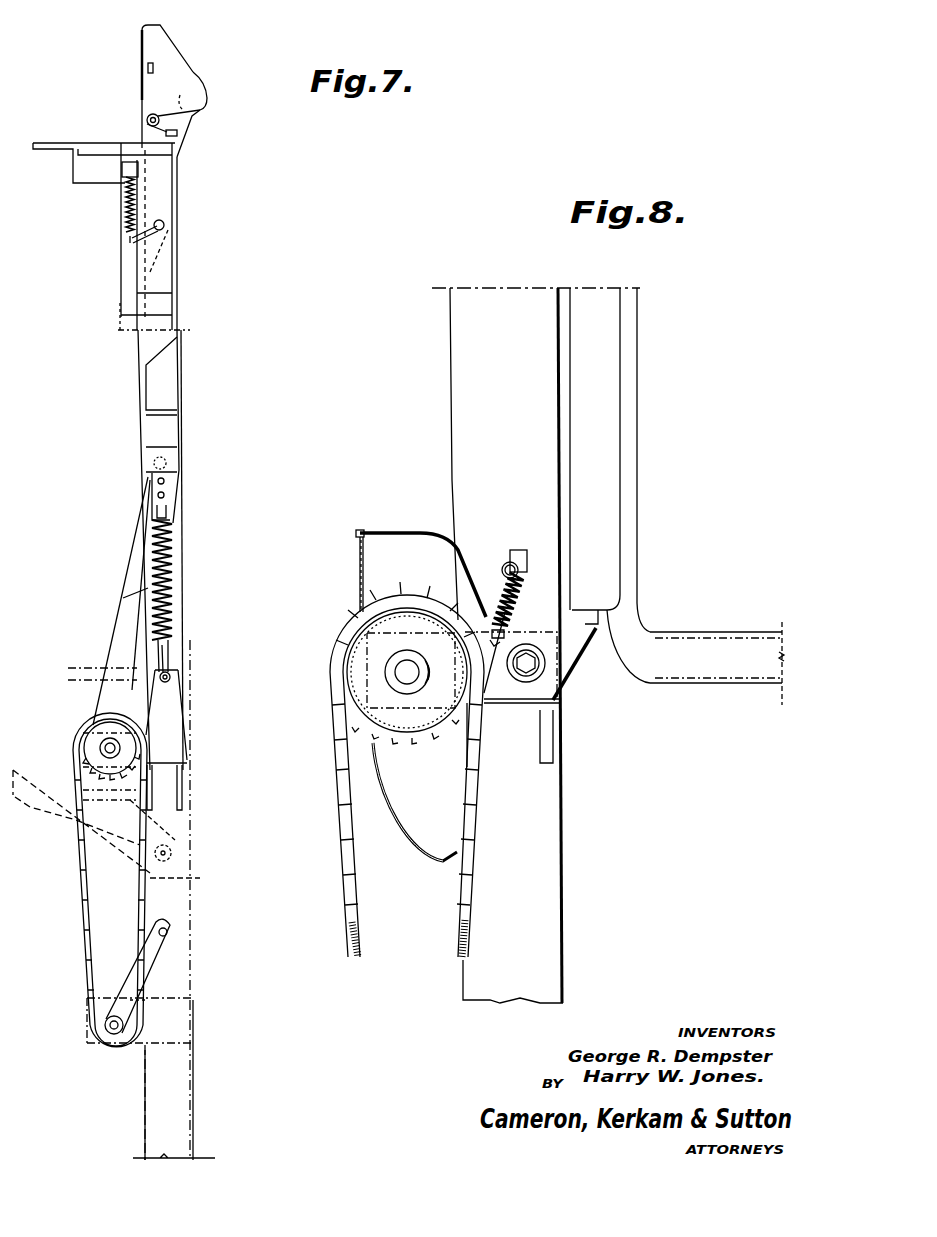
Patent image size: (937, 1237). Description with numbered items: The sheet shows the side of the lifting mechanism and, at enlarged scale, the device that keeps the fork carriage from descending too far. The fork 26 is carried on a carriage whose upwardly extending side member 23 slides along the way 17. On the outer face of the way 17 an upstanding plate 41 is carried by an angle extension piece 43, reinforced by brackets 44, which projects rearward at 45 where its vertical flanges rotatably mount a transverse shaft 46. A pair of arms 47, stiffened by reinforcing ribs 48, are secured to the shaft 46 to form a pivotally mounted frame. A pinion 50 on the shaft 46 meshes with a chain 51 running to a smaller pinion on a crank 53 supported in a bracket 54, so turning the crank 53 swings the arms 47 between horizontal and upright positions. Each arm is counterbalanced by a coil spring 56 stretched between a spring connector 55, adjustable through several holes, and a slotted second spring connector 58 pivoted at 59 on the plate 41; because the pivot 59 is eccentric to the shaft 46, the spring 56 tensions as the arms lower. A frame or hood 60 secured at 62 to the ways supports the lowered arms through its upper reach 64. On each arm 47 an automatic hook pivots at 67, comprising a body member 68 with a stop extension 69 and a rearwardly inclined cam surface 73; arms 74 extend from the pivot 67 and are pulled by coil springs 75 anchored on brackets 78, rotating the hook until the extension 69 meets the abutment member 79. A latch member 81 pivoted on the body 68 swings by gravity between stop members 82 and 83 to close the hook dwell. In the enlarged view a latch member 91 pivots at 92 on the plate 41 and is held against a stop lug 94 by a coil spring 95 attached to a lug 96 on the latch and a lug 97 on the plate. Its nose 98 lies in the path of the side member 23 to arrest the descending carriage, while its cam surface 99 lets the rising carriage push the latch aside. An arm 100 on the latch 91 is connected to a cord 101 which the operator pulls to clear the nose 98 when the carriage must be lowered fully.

In FIG. 8, the way 17 is at (545, 786).
In FIG. 8, the side member 23 is at (610, 484).
In FIG. 8, the fork 26 is at (692, 652).
In FIG. 7, the upstanding plate 41 is at (168, 712).
In FIG. 8, the upstanding plate 41 is at (540, 610).
In FIG. 7, the angle extension piece 43 is at (188, 763).
In FIG. 8, the angle extension piece 43 is at (560, 710).
In FIG. 7, the bracket 44 is at (183, 792).
In FIG. 8, the bracket 44 is at (545, 760).
In FIG. 7, the rear projection of angle extension piece 45 is at (93, 742).
In FIG. 7, the transverse shaft 46 is at (116, 746).
In FIG. 8, the transverse shaft 46 is at (396, 668).
In FIG. 7, the arm 47 is at (170, 393).
In FIG. 7, the reinforcing rib 48 is at (137, 658).
In FIG. 7, the pinion 50 is at (76, 750).
In FIG. 8, the pinion 50 is at (340, 676).
In FIG. 7, the chain 51 is at (84, 942).
In FIG. 8, the chain 51 is at (345, 843).
In FIG. 7, the crank 53 is at (150, 955).
In FIG. 7, the bracket 54 is at (85, 1045).
In FIG. 7, the spring connector 55 is at (166, 493).
In FIG. 7, the coil spring 56 is at (172, 572).
In FIG. 7, the second spring connector 58 is at (170, 655).
In FIG. 7, the pivot 59 is at (171, 675).
In FIG. 7, the frame or hood 60 is at (81, 821).
In FIG. 7, the attachment point 62 is at (172, 850).
In FIG. 7, the upper reach of frame 64 is at (180, 822).
In FIG. 7, the pivot 67 is at (165, 222).
In FIG. 7, the body member 68 is at (185, 62).
In FIG. 7, the stop extension 69 is at (170, 265).
In FIG. 7, the cam surface 73 is at (183, 165).
In FIG. 7, the arm 74 is at (136, 243).
In FIG. 7, the coil spring 75 is at (127, 212).
In FIG. 7, the bracket 78 is at (130, 165).
In FIG. 7, the abutment member 79 is at (120, 305).
In FIG. 7, the latch member 81 is at (185, 98).
In FIG. 7, the stop member 82 is at (178, 133).
In FIG. 7, the stop member 83 is at (147, 69).
In FIG. 8, the latch member 91 is at (520, 620).
In FIG. 8, the pivot 92 is at (527, 682).
In FIG. 8, the stop lug 94 is at (506, 560).
In FIG. 8, the coil spring 95 is at (496, 628).
In FIG. 8, the lug 96 is at (482, 662).
In FIG. 8, the lug 97 is at (525, 560).
In FIG. 8, the nose 98 is at (590, 625).
In FIG. 8, the cam surface 99 is at (580, 660).
In FIG. 8, the arm 100 is at (397, 532).
In FIG. 8, the cord 101 is at (438, 860).